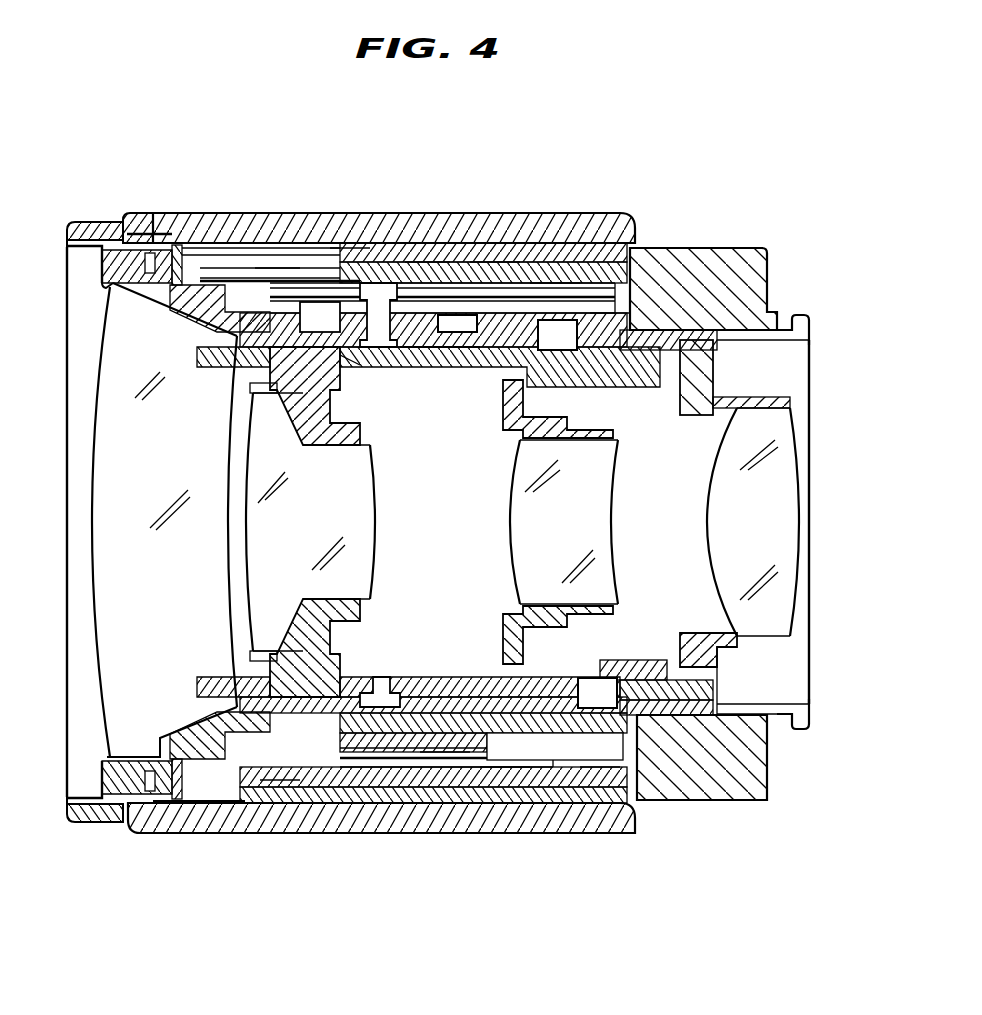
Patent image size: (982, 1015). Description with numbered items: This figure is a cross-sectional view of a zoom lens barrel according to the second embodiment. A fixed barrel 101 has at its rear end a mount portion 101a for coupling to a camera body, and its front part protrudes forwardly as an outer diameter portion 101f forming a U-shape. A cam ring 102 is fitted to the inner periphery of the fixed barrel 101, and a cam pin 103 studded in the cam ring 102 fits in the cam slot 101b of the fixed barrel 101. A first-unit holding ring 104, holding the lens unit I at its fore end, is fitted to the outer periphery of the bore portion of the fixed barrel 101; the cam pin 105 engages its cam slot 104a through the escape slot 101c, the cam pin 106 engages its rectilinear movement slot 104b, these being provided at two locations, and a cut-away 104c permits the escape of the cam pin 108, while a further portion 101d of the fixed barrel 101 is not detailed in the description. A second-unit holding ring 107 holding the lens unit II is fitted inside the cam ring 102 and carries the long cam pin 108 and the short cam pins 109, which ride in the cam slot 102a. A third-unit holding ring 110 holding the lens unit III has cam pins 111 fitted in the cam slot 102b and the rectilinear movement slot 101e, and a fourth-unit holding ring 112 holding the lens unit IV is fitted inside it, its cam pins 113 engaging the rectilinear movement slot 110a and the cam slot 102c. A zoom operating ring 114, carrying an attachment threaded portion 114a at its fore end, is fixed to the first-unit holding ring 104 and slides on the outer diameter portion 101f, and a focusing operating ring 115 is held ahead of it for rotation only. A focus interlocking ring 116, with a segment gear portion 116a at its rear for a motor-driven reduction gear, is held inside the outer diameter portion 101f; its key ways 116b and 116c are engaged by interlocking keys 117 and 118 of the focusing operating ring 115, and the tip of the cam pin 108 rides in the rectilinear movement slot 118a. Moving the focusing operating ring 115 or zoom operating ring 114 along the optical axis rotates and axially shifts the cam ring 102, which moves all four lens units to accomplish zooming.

The fixed barrel 101 is at (775, 262).
The mount portion 101a is at (798, 316).
The cam slot 101b is at (492, 275).
The escape slot 101c is at (278, 262).
The portion of fixed barrel 101d is at (428, 290).
The rectilinear movement slot 101e is at (663, 350).
The outer diameter portion 101f is at (348, 255).
The cam ring 102 is at (753, 283).
The cam slot 102a is at (405, 352).
The cam slot 102b is at (603, 388).
The cam slot 102c is at (658, 755).
The cam pin 103 is at (462, 318).
The first-unit holding ring 104 is at (222, 215).
The cam slot 104a is at (308, 300).
The rectilinear movement slot 104b is at (238, 800).
The cut-away 104c is at (440, 348).
The cam pin 105 is at (343, 283).
The cam pin 106 is at (276, 770).
The second-unit holding ring 107 is at (350, 365).
The cam pin 108 is at (400, 295).
The cam pin 109 is at (370, 770).
The third-unit holding ring 110 is at (700, 338).
The rectilinear movement slot 110a is at (628, 687).
The cam pin 111 is at (602, 300).
The fourth-unit holding ring 112 is at (725, 800).
The cam pin 113 is at (597, 790).
The zoom operating ring 114 is at (374, 268).
The attachment threaded portion 114a is at (92, 236).
The focusing operating ring 115 is at (146, 213).
The focus interlocking ring 116 is at (546, 292).
The segment gear portion 116a is at (565, 775).
The key way 116b is at (550, 270).
The key way 116c is at (503, 780).
The interlocking key 117 is at (445, 770).
The interlocking key 118 is at (237, 290).
The rectilinear movement slot 118a is at (568, 330).
The lens unit I is at (85, 374).
The lens unit II is at (352, 490).
The lens unit III is at (598, 490).
The lens unit IV is at (790, 490).